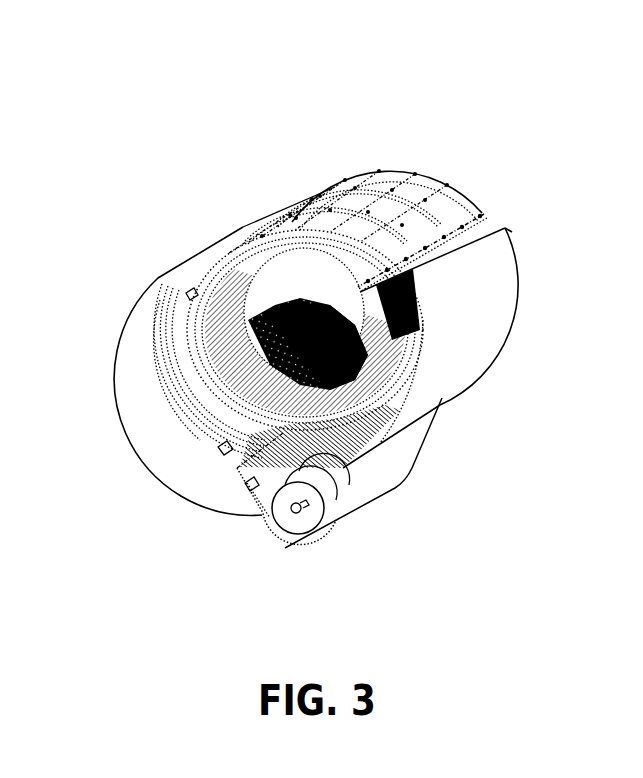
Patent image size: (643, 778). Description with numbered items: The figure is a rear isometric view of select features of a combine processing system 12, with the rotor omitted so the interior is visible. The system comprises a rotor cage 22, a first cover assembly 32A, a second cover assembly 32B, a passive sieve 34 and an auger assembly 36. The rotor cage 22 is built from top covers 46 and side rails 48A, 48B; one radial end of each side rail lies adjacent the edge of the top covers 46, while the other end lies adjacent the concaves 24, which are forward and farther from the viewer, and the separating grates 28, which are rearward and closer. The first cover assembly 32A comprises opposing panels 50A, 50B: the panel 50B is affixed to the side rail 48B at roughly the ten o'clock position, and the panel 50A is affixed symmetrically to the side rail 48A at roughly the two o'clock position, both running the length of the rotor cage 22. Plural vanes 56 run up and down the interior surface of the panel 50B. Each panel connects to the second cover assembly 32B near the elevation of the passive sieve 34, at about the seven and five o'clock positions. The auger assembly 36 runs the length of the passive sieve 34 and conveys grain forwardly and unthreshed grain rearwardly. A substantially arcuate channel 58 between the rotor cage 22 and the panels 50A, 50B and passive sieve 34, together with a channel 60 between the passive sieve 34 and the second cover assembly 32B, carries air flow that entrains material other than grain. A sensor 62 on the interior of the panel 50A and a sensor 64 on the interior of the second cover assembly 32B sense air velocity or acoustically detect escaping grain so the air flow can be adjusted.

The combine processing system 12 is at (548, 120).
The rotor cage 22 is at (367, 174).
The concaves 24 is at (298, 313).
The separating grates 28 is at (207, 365).
The first cover assembly 32A is at (510, 240).
The second cover assembly 32B is at (410, 472).
The passive sieve 34 is at (238, 467).
The auger assembly 36 is at (307, 520).
The top covers 46 is at (424, 193).
The side rail 48A is at (392, 327).
The side rail 48B is at (193, 299).
The panel 50A is at (500, 290).
The panel 50B is at (150, 310).
The vanes 56 is at (212, 428).
The arcuate channel 58 is at (178, 419).
The channel 60 is at (258, 504).
The sensor 62 is at (220, 453).
The sensor 64 is at (245, 488).